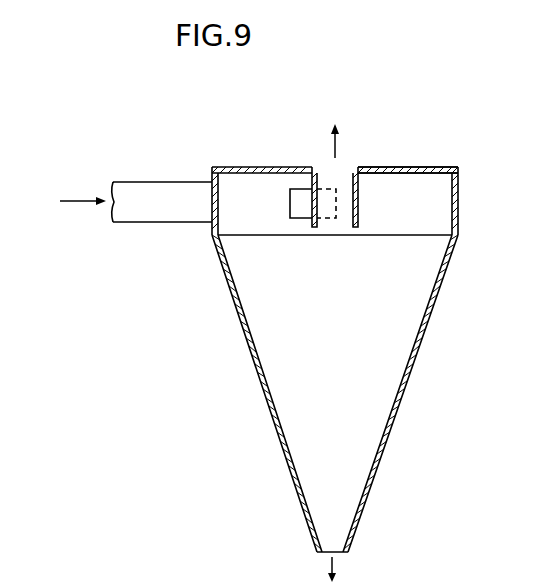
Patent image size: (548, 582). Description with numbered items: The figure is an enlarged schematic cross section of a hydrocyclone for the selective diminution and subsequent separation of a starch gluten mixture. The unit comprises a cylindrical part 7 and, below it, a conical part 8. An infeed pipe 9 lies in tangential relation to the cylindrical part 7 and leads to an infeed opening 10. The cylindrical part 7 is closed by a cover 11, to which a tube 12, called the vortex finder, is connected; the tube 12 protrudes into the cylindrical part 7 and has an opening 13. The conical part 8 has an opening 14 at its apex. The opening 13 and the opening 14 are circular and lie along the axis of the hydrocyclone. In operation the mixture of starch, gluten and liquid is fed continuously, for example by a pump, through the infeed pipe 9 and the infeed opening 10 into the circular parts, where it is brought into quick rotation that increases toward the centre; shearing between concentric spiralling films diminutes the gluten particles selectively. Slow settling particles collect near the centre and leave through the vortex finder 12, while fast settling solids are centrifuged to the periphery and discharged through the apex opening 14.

The cylindrical part 7 is at (458, 216).
The conical part 8 is at (397, 410).
The infeed pipe 9 is at (170, 182).
The infeed opening 10 is at (290, 195).
The cover 11 is at (398, 167).
The tube 12 is at (358, 208).
The opening 13 is at (339, 227).
The opening 14 is at (349, 553).